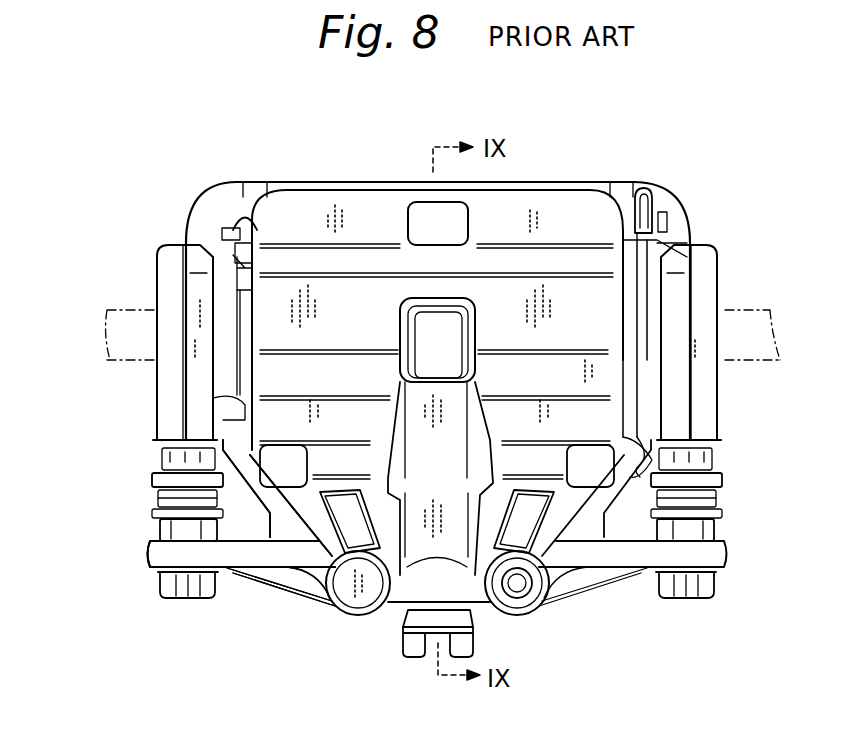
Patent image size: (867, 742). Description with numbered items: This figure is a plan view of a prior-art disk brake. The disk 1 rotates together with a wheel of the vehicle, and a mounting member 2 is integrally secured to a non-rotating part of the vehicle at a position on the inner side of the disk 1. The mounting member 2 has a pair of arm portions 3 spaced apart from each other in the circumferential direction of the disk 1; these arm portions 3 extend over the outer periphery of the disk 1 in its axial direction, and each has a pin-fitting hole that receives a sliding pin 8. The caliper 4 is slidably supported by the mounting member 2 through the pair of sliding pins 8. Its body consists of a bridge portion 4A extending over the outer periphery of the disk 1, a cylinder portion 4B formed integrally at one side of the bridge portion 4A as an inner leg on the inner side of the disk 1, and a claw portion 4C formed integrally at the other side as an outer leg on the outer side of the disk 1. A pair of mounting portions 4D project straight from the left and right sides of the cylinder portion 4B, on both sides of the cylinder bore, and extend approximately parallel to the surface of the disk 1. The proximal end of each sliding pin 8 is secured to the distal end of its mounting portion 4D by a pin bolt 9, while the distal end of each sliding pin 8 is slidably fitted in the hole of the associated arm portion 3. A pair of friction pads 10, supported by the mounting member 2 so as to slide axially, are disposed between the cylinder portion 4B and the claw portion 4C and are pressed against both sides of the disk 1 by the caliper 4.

The disk 1 is at (743, 303).
The mounting member 2 is at (673, 201).
The arm portions 3 is at (170, 287).
The caliper 4 is at (307, 582).
The bridge portion 4A is at (597, 373).
The cylinder portion 4B is at (430, 580).
The claw portion 4C is at (357, 210).
The mounting portions 4D is at (158, 553).
The sliding pins 8 is at (163, 528).
The pin bolt 9 is at (183, 593).
The friction pads 10 is at (237, 256).